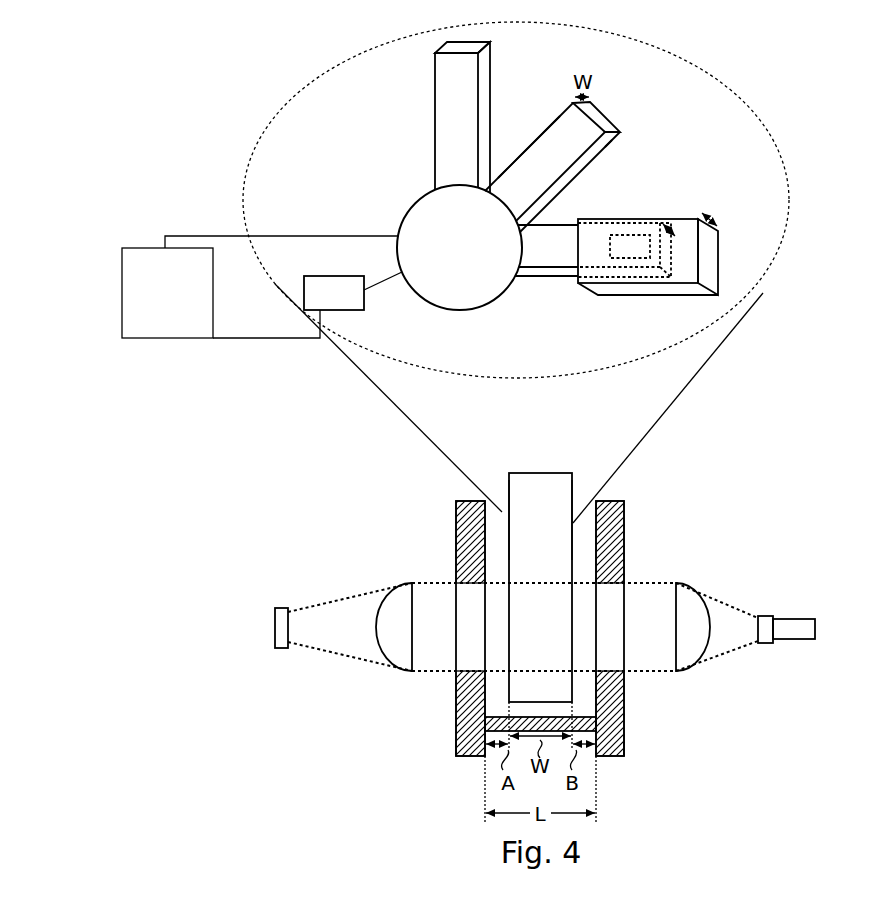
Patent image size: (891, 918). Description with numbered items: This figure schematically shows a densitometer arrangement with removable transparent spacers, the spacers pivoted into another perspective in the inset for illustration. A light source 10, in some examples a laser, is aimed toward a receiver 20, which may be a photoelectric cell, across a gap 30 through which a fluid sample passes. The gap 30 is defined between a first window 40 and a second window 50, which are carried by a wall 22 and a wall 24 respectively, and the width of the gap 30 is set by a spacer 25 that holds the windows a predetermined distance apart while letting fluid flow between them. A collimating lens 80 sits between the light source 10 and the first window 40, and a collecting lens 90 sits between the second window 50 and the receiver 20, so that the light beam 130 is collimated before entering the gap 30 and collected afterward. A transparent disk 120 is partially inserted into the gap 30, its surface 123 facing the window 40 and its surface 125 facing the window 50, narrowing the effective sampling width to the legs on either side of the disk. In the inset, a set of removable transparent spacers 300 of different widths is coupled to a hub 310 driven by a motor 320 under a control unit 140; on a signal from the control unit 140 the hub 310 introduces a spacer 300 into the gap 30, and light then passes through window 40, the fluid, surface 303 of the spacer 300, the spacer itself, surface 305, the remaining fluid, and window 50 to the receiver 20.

The light source 10 is at (797, 641).
The receiver 20 is at (275, 628).
The wall 22 is at (612, 757).
The wall 24 is at (456, 748).
The spacer 25 is at (626, 724).
The gap 30 is at (684, 218).
The first window 40 is at (630, 229).
The second window 50 is at (456, 662).
The lens 80 is at (735, 650).
The lens 90 is at (404, 590).
The transparent disk 120 is at (537, 472).
The surface 123 is at (580, 486).
The surface 125 is at (500, 486).
The light beam 130 is at (328, 590).
The control unit 140 is at (142, 252).
The transparent spacer 300 is at (435, 122).
The surface 303 is at (527, 150).
The surface 305 is at (618, 141).
The hub 310 is at (403, 215).
The motor 320 is at (317, 304).